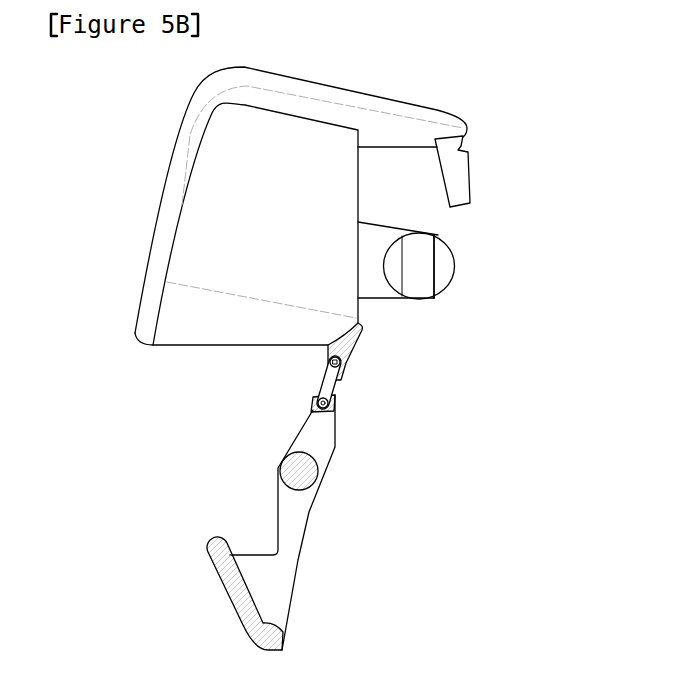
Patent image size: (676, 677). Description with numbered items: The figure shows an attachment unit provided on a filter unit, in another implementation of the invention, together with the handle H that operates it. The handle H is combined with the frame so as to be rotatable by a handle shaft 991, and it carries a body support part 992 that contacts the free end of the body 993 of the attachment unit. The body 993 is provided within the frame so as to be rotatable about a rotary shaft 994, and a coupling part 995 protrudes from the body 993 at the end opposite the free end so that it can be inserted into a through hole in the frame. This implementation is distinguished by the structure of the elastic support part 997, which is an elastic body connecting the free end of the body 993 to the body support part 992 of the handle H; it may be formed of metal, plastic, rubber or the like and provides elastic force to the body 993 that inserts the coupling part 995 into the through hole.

The handle H is at (182, 147).
The handle shaft 991 is at (427, 268).
The body support part 992 is at (353, 355).
The body 993 is at (325, 445).
The rotary shaft 994 is at (305, 480).
The coupling part 995 is at (235, 589).
The elastic support part 997 is at (337, 392).